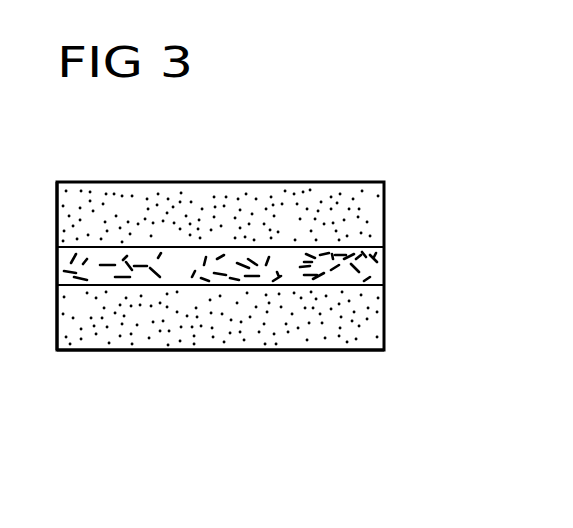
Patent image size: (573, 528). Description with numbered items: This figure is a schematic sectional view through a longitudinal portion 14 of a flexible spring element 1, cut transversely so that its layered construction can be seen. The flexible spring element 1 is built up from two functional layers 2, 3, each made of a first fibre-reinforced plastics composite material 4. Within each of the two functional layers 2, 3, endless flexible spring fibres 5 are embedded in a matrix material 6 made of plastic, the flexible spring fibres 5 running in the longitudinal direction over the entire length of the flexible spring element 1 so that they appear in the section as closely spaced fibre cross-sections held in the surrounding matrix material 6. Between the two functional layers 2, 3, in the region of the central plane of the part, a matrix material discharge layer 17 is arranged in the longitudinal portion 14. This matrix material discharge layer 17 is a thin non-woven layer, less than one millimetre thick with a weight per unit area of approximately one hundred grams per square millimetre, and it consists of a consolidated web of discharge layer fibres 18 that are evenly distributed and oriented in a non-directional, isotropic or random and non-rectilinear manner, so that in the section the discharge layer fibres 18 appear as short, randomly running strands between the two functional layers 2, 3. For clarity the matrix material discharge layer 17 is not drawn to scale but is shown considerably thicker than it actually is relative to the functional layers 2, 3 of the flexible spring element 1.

The flexible spring element 1 is at (373, 168).
The functional layer 2 is at (384, 207).
The functional layer 3 is at (384, 312).
The first fibre-reinforced plastics composite material 4 is at (79, 196).
The flexible spring fibres 5 is at (290, 200).
The matrix material 6 is at (160, 193).
The longitudinal portion 14 is at (208, 363).
The matrix material discharge layer 17 is at (384, 266).
The discharge layer fibres 18 is at (107, 266).